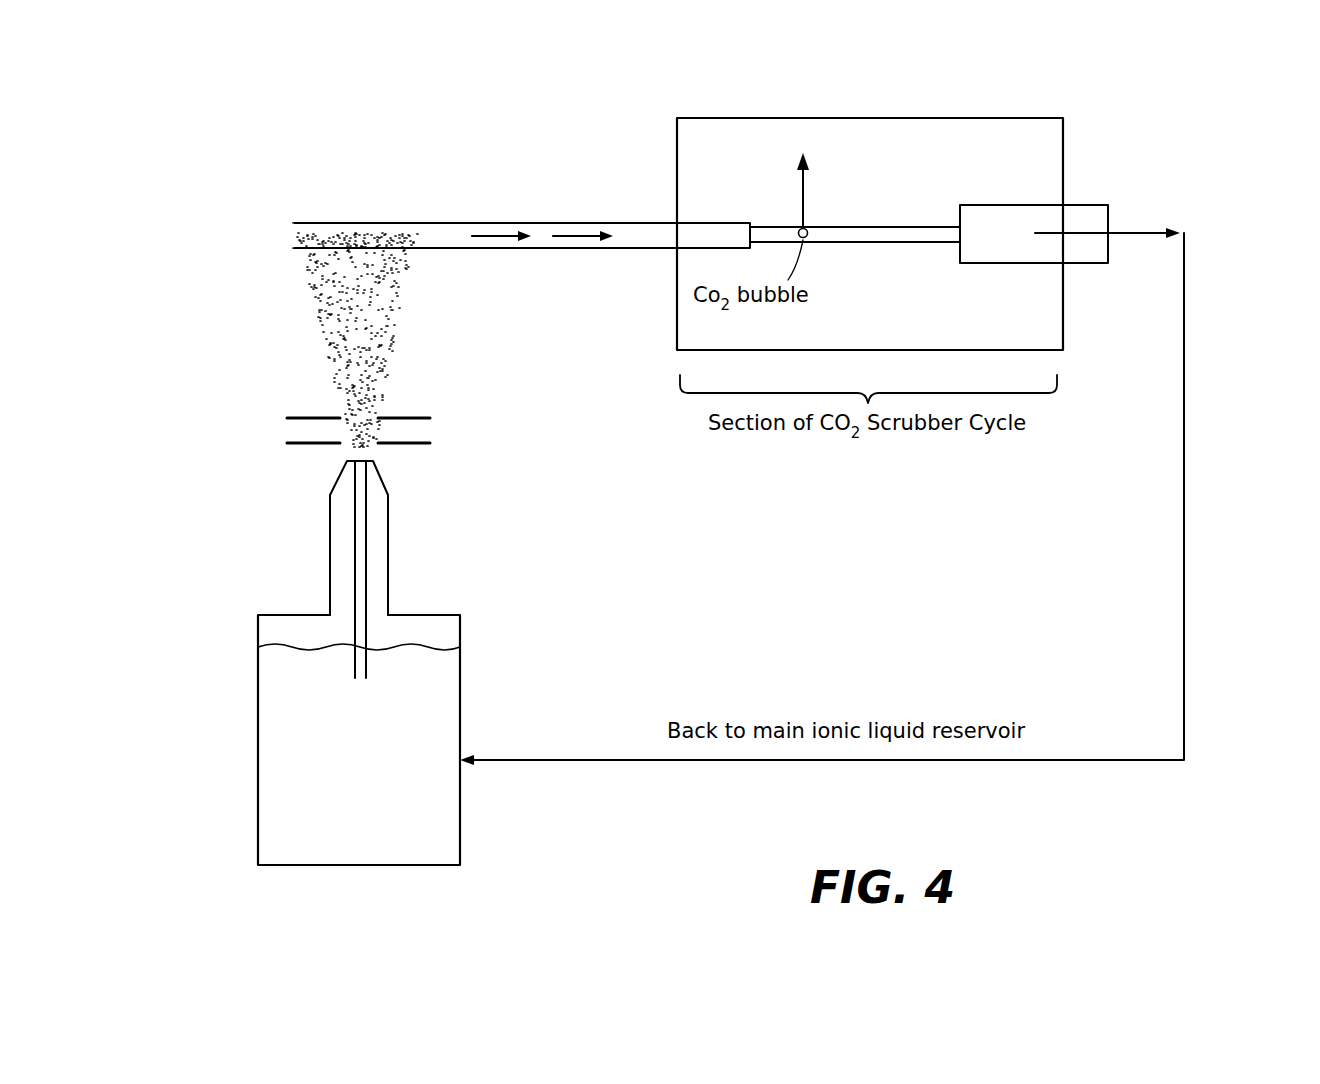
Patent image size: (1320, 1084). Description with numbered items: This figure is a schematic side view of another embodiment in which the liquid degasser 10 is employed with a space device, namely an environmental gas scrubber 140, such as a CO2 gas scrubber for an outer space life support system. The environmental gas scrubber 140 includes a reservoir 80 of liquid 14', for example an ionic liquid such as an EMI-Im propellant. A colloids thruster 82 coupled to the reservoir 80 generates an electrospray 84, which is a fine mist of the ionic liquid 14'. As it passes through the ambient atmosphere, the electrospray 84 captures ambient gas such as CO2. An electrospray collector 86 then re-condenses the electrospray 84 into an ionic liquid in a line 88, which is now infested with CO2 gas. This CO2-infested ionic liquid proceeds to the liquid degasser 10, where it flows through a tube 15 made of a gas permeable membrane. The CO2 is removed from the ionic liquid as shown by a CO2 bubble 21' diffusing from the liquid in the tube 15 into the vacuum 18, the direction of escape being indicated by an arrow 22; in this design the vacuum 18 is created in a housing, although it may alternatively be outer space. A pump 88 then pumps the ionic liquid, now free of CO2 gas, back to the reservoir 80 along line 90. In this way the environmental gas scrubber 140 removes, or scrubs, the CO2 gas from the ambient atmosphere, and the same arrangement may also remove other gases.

The liquid degasser 10 is at (735, 92).
The liquid 14' is at (326, 740).
The tube 15 is at (874, 243).
The vacuum 18 is at (1053, 134).
The CO2 bubble 21' is at (766, 204).
The CO2 release arrow 22 is at (805, 196).
The reservoir 80 is at (460, 700).
The colloids thruster 82 is at (418, 517).
The electrospray 84 is at (552, 250).
The electrospray collector 86 is at (349, 232).
The line 88 is at (470, 250).
The line 90 is at (1184, 665).
The environmental gas scrubber 140 is at (236, 278).